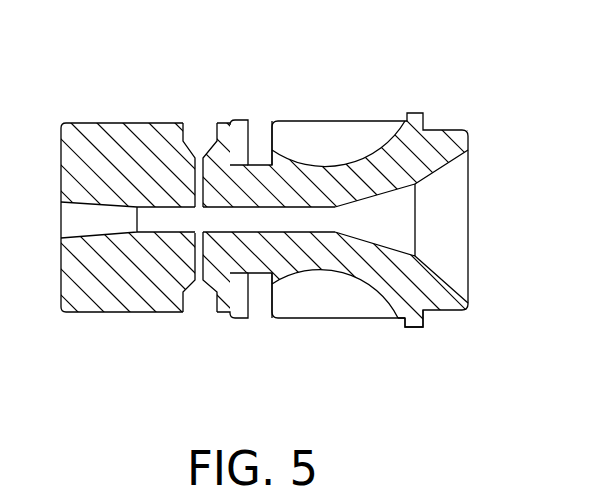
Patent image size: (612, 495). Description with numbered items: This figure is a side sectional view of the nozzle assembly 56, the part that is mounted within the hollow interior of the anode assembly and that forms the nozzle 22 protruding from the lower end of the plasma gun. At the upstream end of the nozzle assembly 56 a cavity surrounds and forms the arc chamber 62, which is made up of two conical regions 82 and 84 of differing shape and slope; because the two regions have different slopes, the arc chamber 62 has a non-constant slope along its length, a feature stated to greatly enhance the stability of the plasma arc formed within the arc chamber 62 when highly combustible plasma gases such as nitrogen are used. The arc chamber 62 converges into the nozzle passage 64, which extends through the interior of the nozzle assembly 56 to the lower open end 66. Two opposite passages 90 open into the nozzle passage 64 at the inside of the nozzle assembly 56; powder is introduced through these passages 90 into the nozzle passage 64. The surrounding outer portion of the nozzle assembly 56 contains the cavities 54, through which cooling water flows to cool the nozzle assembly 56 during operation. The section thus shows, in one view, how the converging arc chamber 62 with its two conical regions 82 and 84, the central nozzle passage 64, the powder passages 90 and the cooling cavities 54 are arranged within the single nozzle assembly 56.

The nozzle 22 is at (87, 123).
The passage 90 is at (196, 182).
The lower open end 66 is at (73, 199).
The nozzle passage 64 is at (270, 208).
The conical region 84 is at (385, 247).
The arc chamber 62 is at (452, 167).
The conical region 82 is at (447, 283).
The cavity 54 is at (325, 307).
The nozzle assembly 56 is at (318, 362).